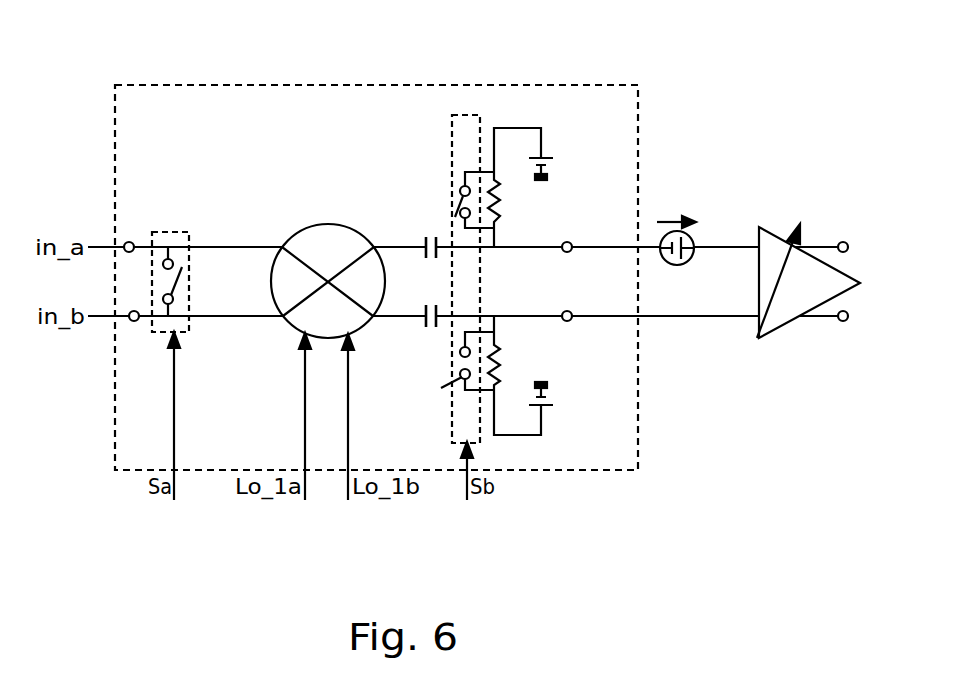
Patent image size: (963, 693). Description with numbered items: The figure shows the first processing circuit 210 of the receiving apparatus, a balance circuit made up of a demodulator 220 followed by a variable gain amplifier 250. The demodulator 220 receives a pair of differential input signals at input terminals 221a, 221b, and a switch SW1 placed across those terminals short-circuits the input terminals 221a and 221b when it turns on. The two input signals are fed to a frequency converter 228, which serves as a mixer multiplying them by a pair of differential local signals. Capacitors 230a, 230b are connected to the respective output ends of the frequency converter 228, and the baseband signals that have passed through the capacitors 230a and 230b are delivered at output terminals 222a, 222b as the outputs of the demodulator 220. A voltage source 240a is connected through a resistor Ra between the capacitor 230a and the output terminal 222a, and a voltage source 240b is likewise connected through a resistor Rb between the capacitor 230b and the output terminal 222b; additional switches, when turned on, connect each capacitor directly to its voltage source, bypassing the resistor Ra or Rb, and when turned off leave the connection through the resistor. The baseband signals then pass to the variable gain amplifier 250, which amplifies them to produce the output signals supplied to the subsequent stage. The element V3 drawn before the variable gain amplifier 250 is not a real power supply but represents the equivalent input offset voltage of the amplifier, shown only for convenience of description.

The first processing circuit 210 is at (387, 62).
The demodulator 220 is at (510, 85).
The input terminal 221a is at (129, 242).
The input terminal 221b is at (135, 321).
The output terminal 222a is at (568, 242).
The output terminal 222b is at (568, 322).
The frequency converter 228 is at (302, 227).
The capacitor 230a is at (425, 237).
The capacitor 230b is at (425, 327).
The voltage source 240a is at (545, 158).
The voltage source 240b is at (546, 405).
The variable gain amplifier 250 is at (772, 233).
The switch SW1 is at (168, 232).
The resistor Ra is at (514, 187).
The resistor Rb is at (514, 375).
The equivalent input offset voltage V3 is at (676, 230).